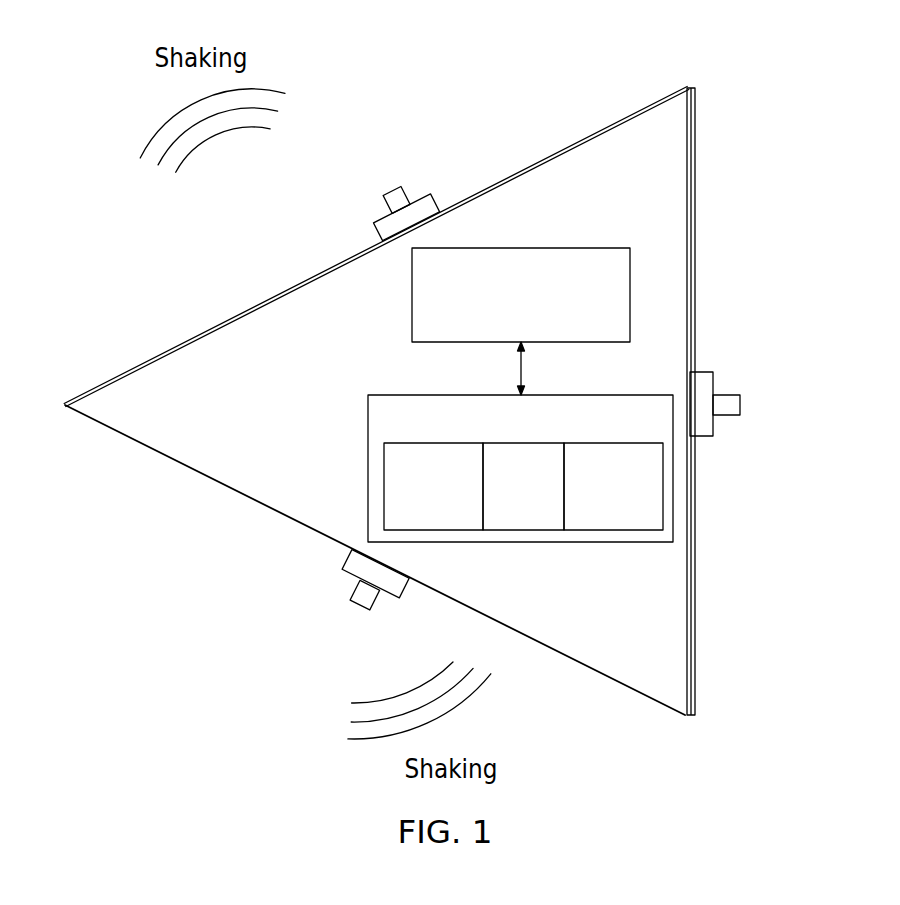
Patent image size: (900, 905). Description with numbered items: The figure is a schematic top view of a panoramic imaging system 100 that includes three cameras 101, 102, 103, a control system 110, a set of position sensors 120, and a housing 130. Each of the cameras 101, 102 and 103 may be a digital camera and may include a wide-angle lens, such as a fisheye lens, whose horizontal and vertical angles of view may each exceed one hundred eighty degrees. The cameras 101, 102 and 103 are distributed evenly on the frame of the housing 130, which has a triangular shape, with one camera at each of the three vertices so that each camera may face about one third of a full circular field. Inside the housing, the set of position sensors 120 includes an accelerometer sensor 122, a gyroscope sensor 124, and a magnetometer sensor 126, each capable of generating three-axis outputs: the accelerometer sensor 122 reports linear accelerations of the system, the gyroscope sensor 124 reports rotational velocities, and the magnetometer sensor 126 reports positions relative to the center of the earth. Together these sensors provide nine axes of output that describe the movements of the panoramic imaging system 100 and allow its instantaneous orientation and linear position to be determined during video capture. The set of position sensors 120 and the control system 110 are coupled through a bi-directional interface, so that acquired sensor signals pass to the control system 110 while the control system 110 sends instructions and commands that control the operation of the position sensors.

The panoramic imaging system 100 is at (746, 117).
The camera 101 is at (401, 193).
The camera 102 is at (370, 606).
The camera 103 is at (748, 404).
The control system 110 is at (521, 295).
The set of position sensors 120 is at (520, 468).
The accelerometer sensor 122 is at (433, 486).
The gyroscope sensor 124 is at (523, 486).
The magnetometer sensor 126 is at (613, 486).
The housing 130 is at (696, 323).